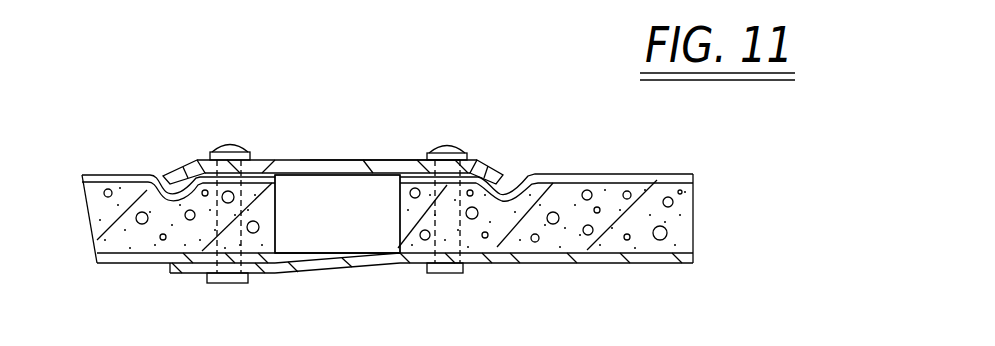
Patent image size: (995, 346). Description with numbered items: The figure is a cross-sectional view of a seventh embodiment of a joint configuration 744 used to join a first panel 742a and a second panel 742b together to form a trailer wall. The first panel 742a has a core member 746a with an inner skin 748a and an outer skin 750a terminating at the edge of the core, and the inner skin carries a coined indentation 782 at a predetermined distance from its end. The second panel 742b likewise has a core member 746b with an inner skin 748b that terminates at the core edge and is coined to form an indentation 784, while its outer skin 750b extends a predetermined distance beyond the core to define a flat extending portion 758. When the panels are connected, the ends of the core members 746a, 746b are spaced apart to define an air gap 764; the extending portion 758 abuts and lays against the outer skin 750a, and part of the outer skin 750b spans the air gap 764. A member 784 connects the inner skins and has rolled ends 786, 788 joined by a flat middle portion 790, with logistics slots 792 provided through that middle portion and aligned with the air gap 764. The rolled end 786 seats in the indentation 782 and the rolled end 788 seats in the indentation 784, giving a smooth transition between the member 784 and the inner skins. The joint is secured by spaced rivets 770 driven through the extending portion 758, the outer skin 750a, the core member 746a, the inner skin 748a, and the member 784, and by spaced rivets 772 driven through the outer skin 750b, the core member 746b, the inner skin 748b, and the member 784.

The first panel 742a is at (120, 238).
The second panel 742b is at (680, 233).
The joint configuration 744 is at (337, 292).
The core member of first panel 746a is at (122, 193).
The core member of second panel 746b is at (682, 202).
The inner skin of first panel 748a is at (104, 175).
The inner skin of second panel 748b is at (675, 173).
The outer skin of first panel 750a is at (193, 257).
The outer skin of second panel 750b is at (620, 266).
The flat extending portion 758 is at (297, 271).
The air gap 764 is at (368, 248).
The rivets 770 is at (238, 149).
The rivets 772 is at (448, 145).
The indentation 782 is at (309, 262).
The member 784 is at (351, 194).
The rolled end 786 is at (192, 160).
The rolled end 788 is at (498, 168).
The flat middle portion 790 is at (390, 159).
The logistics slots 792 is at (337, 214).